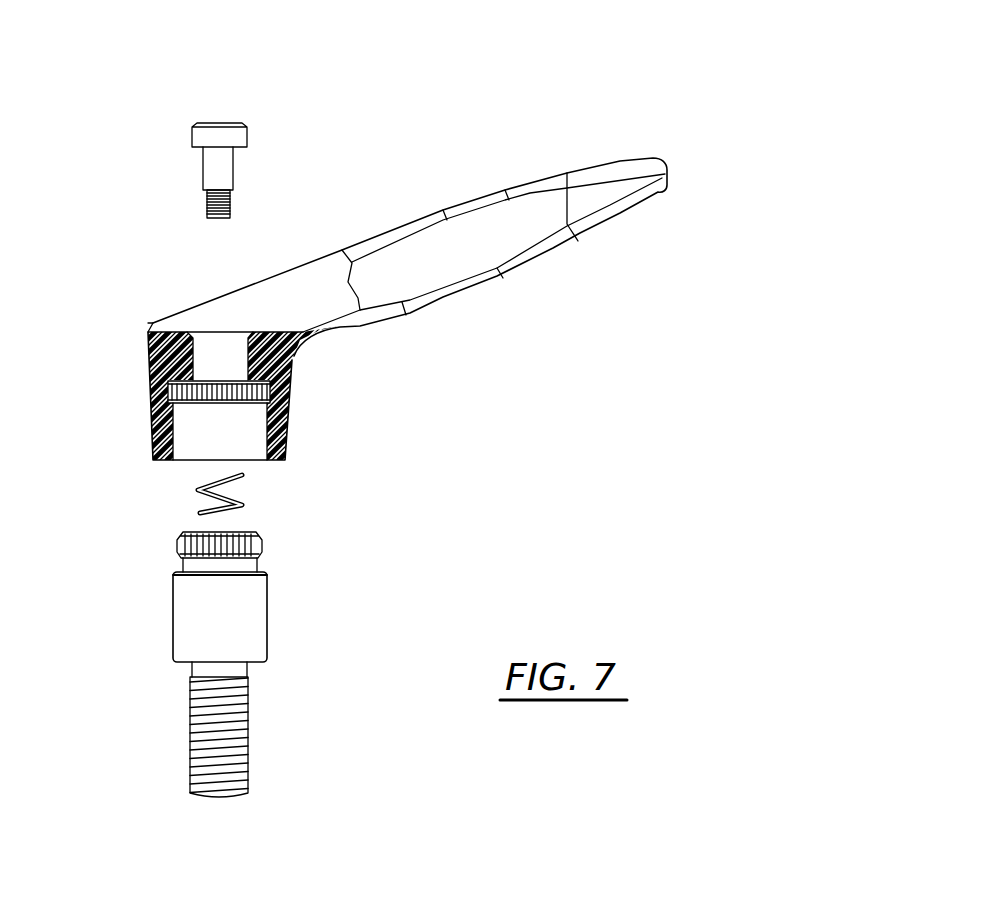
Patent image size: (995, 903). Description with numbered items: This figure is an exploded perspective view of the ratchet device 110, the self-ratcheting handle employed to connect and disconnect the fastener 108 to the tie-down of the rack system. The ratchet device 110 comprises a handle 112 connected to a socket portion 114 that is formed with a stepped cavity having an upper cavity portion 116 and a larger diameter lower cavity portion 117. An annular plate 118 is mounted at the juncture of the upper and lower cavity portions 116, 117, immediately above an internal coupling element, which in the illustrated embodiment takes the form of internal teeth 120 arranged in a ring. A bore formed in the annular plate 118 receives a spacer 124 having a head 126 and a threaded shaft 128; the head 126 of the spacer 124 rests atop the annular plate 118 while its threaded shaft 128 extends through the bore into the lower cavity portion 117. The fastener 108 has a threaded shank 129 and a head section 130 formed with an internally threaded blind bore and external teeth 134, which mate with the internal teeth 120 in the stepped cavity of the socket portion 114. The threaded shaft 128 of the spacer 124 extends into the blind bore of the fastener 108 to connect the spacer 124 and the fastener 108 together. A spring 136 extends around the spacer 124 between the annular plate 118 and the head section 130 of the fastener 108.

The ratchet device 110 is at (714, 83).
The handle 112 is at (455, 207).
The socket portion 114 is at (148, 348).
The upper cavity portion 116 is at (218, 352).
The lower cavity portion 117 is at (245, 430).
The annular plate 118 is at (245, 382).
The internal teeth 120 is at (168, 393).
The spacer 124 is at (176, 159).
The head 126 is at (238, 132).
The threaded shaft 128 is at (230, 207).
The threaded shank 129 is at (248, 703).
The head section 130 is at (163, 544).
The external teeth 134 is at (262, 545).
The spring 136 is at (196, 492).
The fastener 108 is at (158, 718).